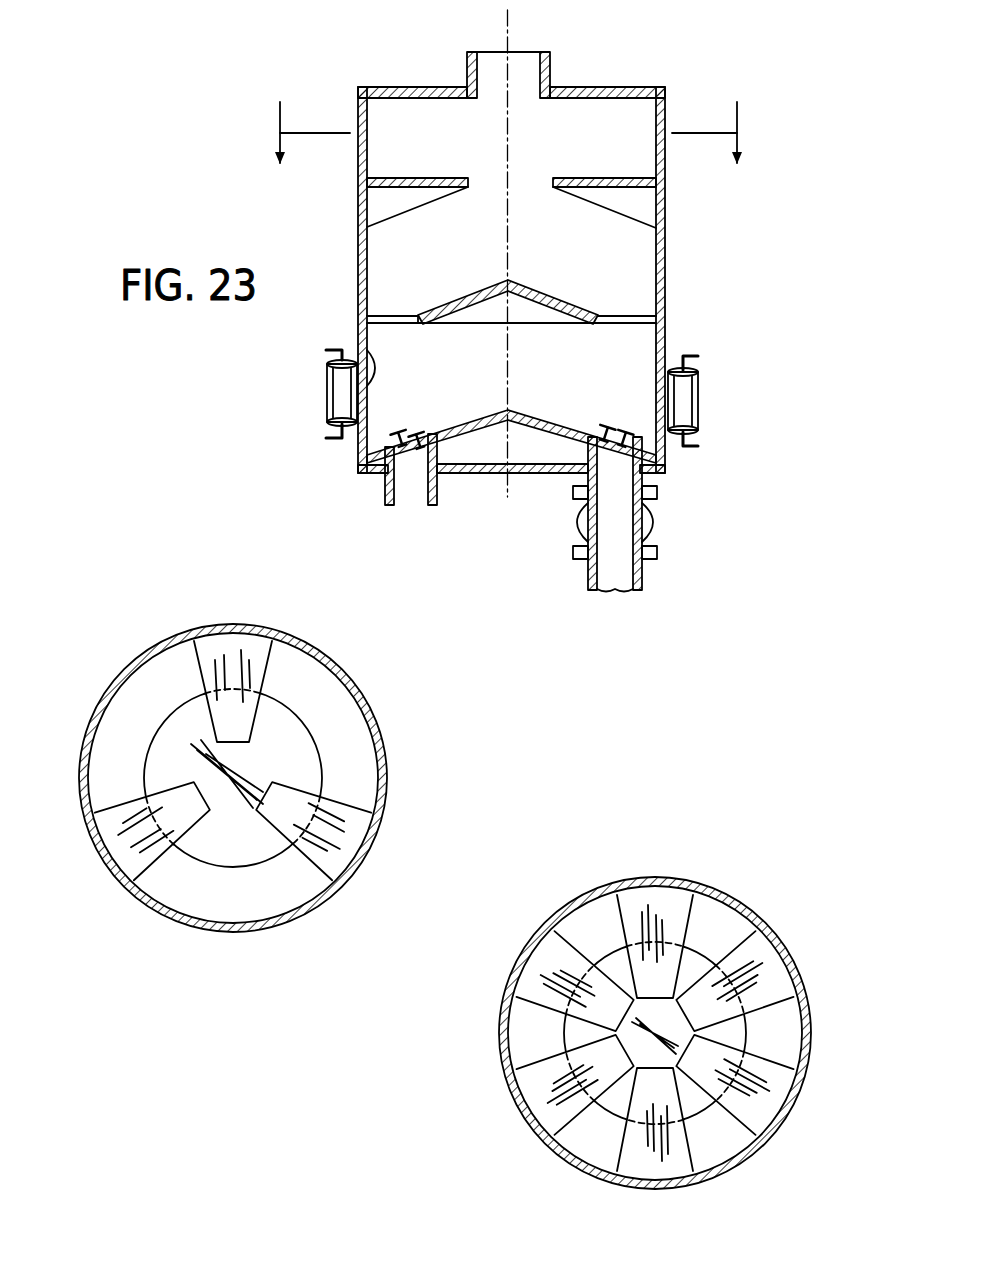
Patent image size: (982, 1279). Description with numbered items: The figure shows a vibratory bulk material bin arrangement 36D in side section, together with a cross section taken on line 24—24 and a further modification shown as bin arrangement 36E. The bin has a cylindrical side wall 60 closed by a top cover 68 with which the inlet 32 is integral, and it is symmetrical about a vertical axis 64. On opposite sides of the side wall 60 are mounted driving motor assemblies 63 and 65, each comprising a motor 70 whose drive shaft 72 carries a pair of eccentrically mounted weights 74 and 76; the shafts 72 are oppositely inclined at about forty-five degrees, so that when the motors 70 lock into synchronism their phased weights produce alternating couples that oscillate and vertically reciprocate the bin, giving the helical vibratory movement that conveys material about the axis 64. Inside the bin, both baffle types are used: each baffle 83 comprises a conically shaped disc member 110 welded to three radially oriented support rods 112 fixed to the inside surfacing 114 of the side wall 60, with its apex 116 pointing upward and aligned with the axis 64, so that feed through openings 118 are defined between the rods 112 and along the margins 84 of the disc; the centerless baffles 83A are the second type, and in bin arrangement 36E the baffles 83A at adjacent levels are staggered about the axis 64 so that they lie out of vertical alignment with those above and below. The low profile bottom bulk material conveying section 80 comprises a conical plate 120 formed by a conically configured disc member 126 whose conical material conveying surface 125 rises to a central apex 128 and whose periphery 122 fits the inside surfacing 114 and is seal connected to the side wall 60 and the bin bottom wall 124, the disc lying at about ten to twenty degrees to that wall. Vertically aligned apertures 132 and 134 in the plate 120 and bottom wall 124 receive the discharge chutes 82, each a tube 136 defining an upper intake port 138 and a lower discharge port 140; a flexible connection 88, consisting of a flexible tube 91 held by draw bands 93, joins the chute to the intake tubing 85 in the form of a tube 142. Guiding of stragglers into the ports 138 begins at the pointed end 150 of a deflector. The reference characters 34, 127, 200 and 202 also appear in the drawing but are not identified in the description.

In FIG. 23, the section line 24 is at (509, 119).
In FIG. 23, the inlet 32 is at (551, 66).
In FIG. 23, the vessel 34 is at (598, 114).
In FIG. 23, the bin arrangement 36D is at (668, 243).
In FIG. 24, the bin arrangement 36D is at (294, 923).
In FIG. 25, the bin arrangement 36E is at (498, 1045).
In FIG. 23, the bin side wall 60 is at (666, 298).
In FIG. 24, the bin side wall 60 is at (80, 741).
In FIG. 25, the bin side wall 60 is at (500, 1015).
In FIG. 23, the driving motor assembly 63 is at (323, 407).
In FIG. 23, the vertical axis 64 is at (510, 30).
In FIG. 23, the driving motor assembly 65 is at (705, 427).
In FIG. 23, the top cover 68 is at (394, 87).
In FIG. 23, the motor 70 is at (326, 392).
In FIG. 23, the drive shaft 72 is at (345, 441).
In FIG. 23, the eccentrically mounted weight 74 is at (329, 441).
In FIG. 23, the eccentrically mounted weight 76 is at (326, 352).
In FIG. 23, the low profile bottom bulk material conveying section 80 is at (497, 500).
In FIG. 23, the discharge chute 82 is at (383, 488).
In FIG. 23, the baffle 83 is at (524, 281).
In FIG. 24, the baffle 83 is at (340, 775).
In FIG. 25, the baffle 83 is at (790, 1010).
In FIG. 23, the centerless baffle 83A is at (668, 177).
In FIG. 25, the centerless baffle 83A is at (668, 876).
In FIG. 23, the margin 84 is at (420, 323).
In FIG. 24, the margin 84 is at (323, 764).
In FIG. 25, the margin 84 is at (770, 1000).
In FIG. 23, the intake tubing 85 is at (585, 592).
In FIG. 23, the flexible connection 88 is at (662, 548).
In FIG. 23, the flexible tube 91 is at (652, 532).
In FIG. 23, the draw band 93 is at (650, 560).
In FIG. 23, the conically shaped disc member 110 is at (560, 325).
In FIG. 24, the conically shaped disc member 110 is at (307, 723).
In FIG. 25, the conically shaped disc member 110 is at (722, 950).
In FIG. 23, the support rod 112 is at (398, 315).
In FIG. 24, the support rod 112 is at (262, 642).
In FIG. 25, the support rod 112 is at (698, 898).
In FIG. 23, the inside surfacing 114 is at (652, 206).
In FIG. 23, the apex 116 is at (509, 279).
In FIG. 24, the feed through opening 118 is at (164, 678).
In FIG. 25, the feed through opening 118 is at (568, 908).
In FIG. 23, the conical plate 120 is at (574, 394).
In FIG. 23, the periphery 122 is at (367, 348).
In FIG. 23, the bin bottom wall 124 is at (524, 474).
In FIG. 23, the conical material conveying surface 125 is at (478, 410).
In FIG. 23, the conically configured disc member 126 is at (587, 431).
In FIG. 23, the chamber 127 is at (508, 421).
In FIG. 23, the central apex 128 is at (512, 412).
In FIG. 23, the aperture 132 is at (441, 432).
In FIG. 23, the aperture 134 is at (440, 484).
In FIG. 23, the tube 136 is at (393, 504).
In FIG. 23, the upper intake port 138 is at (427, 424).
In FIG. 23, the lower discharge port 140 is at (500, 409).
In FIG. 23, the tube 142 is at (646, 573).
In FIG. 23, the pointed end 150 is at (391, 431).
In FIG. 23, the shelf 200 is at (405, 178).
In FIG. 23, the baffle 202 is at (399, 210).